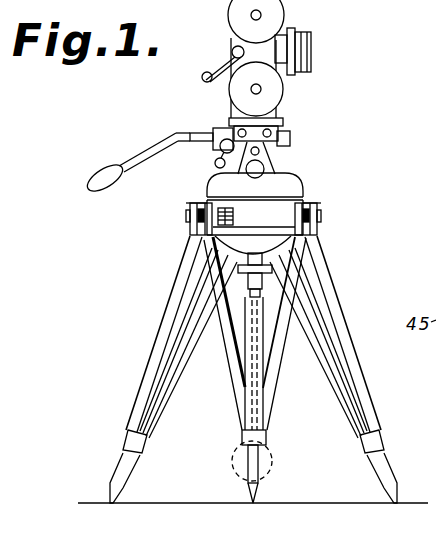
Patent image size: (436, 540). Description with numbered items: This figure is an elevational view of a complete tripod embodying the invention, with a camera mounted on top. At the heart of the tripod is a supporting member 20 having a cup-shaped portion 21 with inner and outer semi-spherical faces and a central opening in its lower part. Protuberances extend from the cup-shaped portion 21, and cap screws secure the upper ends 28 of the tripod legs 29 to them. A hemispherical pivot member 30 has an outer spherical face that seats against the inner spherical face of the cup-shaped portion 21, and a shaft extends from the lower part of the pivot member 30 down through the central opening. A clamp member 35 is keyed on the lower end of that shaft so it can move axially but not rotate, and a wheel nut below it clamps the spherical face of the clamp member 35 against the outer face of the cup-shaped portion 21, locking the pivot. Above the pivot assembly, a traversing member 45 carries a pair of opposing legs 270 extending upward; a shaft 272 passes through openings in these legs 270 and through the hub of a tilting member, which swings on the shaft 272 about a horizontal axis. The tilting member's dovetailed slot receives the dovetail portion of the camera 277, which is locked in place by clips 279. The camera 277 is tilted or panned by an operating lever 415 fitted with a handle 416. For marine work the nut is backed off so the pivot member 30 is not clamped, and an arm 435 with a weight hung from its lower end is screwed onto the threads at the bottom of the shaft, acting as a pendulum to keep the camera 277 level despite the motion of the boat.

The camera 277 is at (276, 92).
The clips 279 is at (284, 122).
The shaft 272 is at (291, 138).
The opposing legs 270 is at (292, 161).
The operating lever 415 is at (156, 146).
The handle 416 is at (107, 174).
The supporting member 20 is at (266, 221).
The traversing member 45 is at (207, 198).
The pivot member 30 is at (207, 200).
The cup-shaped portion 21 is at (250, 216).
The clamp member 35 is at (224, 254).
The upper ends 28 is at (205, 235).
The arm 435 is at (237, 365).
The tripod legs 29 is at (140, 404).